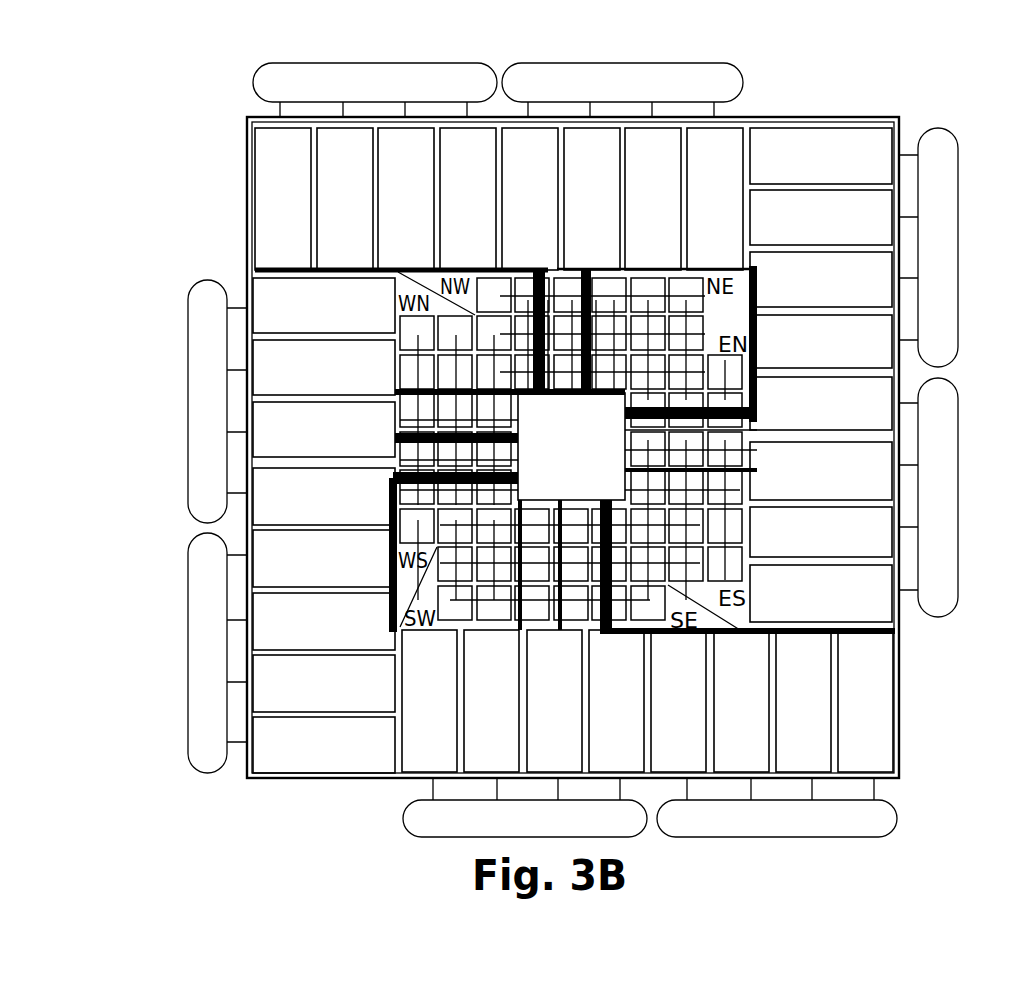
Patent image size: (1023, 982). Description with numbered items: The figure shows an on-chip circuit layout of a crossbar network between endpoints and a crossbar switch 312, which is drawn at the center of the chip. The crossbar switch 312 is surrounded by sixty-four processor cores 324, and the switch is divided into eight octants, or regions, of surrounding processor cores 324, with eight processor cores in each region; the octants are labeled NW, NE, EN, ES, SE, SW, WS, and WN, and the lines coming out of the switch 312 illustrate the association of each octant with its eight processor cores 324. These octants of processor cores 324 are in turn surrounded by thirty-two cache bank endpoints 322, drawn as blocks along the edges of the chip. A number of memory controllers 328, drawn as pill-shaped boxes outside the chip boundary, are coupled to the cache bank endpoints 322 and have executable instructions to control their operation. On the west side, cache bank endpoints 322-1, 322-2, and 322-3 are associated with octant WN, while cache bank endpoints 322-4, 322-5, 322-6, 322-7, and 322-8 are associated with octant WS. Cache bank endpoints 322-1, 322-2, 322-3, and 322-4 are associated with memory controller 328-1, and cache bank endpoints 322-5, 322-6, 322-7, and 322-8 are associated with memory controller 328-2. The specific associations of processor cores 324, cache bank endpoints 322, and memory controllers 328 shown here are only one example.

The crossbar switch 312 is at (612, 410).
The cache bank endpoints 322 is at (858, 593).
The cache bank endpoint 322-1 is at (348, 318).
The cache bank endpoint 322-2 is at (348, 380).
The cache bank endpoint 322-3 is at (348, 442).
The cache bank endpoint 322-4 is at (348, 509).
The cache bank endpoint 322-5 is at (348, 571).
The cache bank endpoint 322-6 is at (348, 634).
The cache bank endpoint 322-7 is at (348, 696).
The cache bank endpoint 322-8 is at (348, 757).
The processor cores 324 is at (683, 575).
The memory controllers 328 is at (743, 81).
The memory controller 328-1 is at (186, 452).
The memory controller 328-2 is at (186, 697).